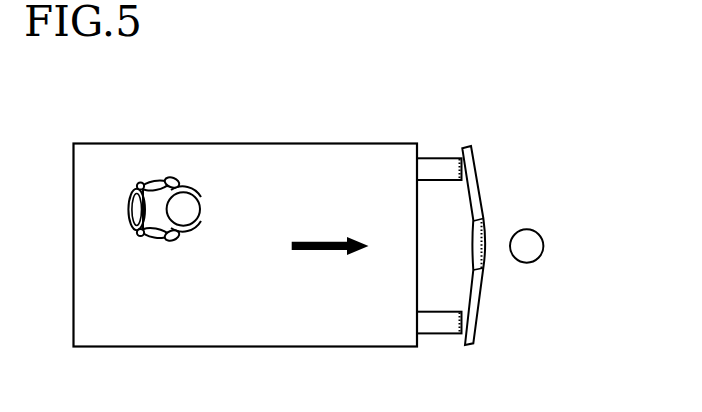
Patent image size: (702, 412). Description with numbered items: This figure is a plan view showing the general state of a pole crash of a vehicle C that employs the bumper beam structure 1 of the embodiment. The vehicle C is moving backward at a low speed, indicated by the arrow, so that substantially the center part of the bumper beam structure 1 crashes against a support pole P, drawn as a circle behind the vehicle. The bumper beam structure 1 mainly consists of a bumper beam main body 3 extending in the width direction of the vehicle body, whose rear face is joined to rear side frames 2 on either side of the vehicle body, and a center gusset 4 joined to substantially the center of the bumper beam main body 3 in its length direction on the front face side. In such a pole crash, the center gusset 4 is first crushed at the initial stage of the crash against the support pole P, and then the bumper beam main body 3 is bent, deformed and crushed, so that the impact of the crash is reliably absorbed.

The bumper beam structure 1 is at (494, 171).
The rear side frames 2 is at (438, 170).
The bumper beam main body 3 is at (481, 319).
The center gusset 4 is at (484, 257).
The vehicle C is at (258, 143).
The support pole P is at (544, 246).